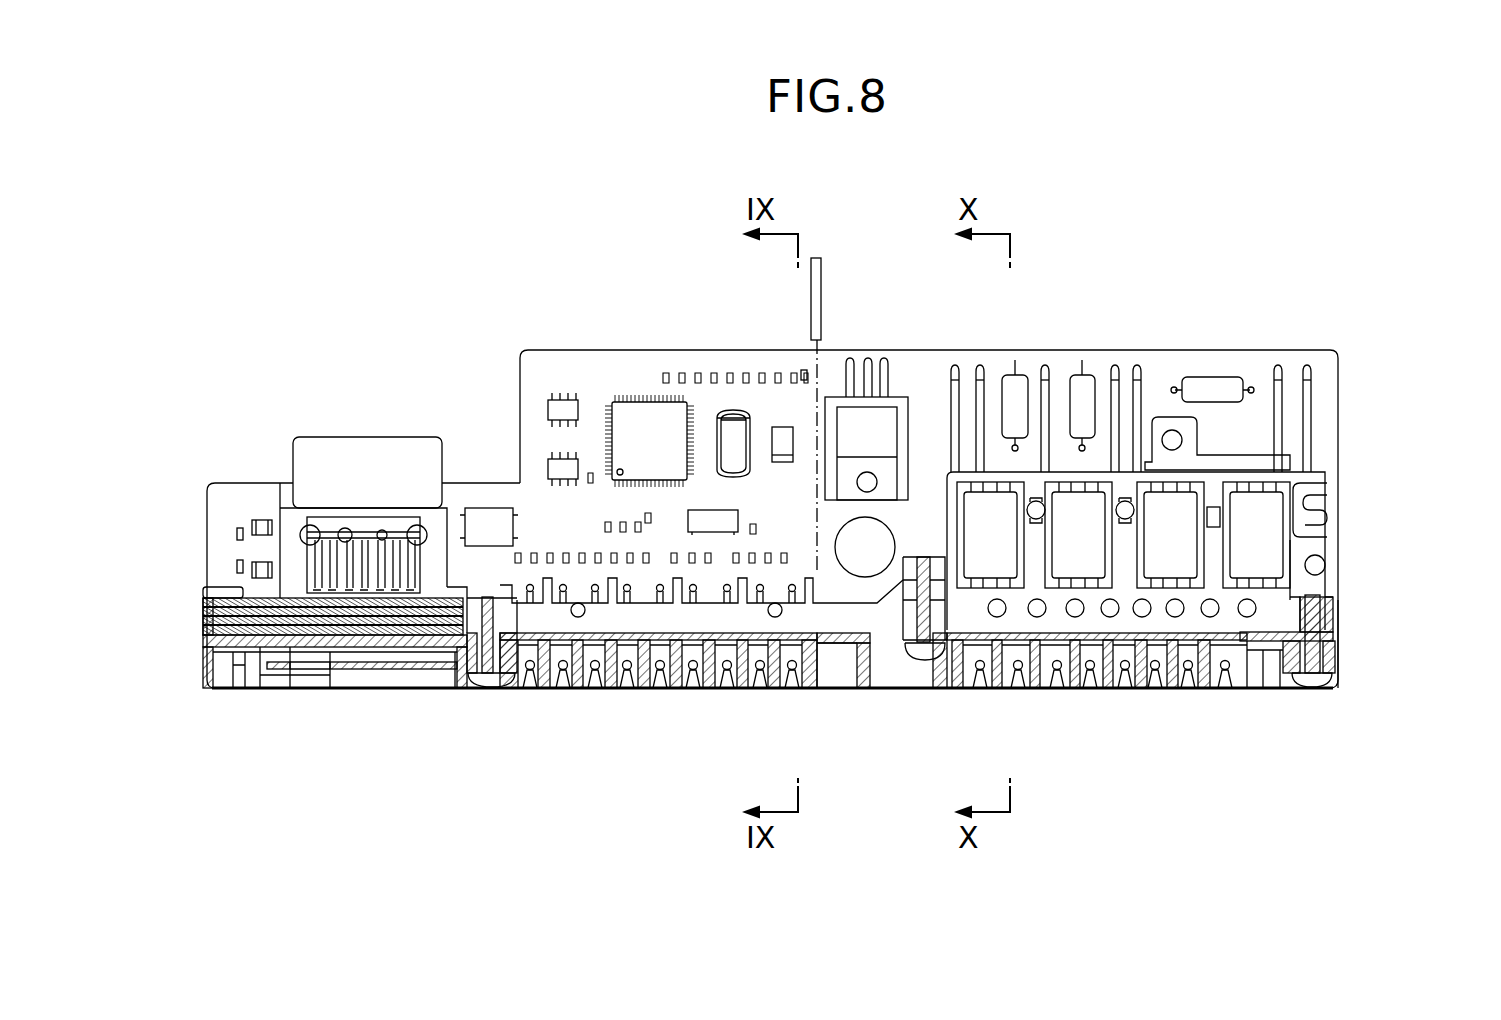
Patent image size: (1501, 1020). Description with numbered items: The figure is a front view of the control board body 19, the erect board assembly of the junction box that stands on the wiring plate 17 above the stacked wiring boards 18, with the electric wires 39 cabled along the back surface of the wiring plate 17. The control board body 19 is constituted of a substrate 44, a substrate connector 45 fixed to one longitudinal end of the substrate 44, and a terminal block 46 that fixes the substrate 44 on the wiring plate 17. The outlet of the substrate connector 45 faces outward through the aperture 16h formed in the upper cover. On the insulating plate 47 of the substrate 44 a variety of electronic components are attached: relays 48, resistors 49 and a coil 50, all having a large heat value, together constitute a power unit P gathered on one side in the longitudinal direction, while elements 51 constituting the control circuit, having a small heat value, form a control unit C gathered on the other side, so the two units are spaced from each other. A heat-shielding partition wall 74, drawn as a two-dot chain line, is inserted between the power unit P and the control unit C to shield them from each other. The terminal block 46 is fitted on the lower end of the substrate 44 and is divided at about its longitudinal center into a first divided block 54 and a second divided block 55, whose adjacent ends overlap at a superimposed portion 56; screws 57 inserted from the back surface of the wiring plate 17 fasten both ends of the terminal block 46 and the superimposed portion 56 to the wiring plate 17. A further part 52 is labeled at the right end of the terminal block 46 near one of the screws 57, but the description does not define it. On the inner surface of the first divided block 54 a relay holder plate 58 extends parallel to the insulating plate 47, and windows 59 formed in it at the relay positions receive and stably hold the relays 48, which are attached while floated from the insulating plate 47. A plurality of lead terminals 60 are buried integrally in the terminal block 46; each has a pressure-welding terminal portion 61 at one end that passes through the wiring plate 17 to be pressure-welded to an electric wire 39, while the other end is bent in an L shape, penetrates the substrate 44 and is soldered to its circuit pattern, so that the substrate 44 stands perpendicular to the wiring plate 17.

The aperture 16h is at (290, 488).
The wiring plate 17 is at (1345, 660).
The wiring boards 18 is at (200, 600).
The control board body 19 is at (1053, 337).
The electric wires 39 is at (373, 672).
The substrate 44 is at (1165, 387).
The substrate connector 45 is at (285, 567).
The terminal block 46 is at (1347, 643).
The insulating plate 47 is at (930, 367).
The relays 48 is at (1180, 515).
The resistors 49 is at (1022, 372).
The coil 50 is at (880, 542).
The elements 51 is at (780, 432).
The nut insert 52 is at (1262, 636).
The first divided block 54 is at (953, 610).
The second divided block 55 is at (650, 620).
The superimposed portion 56 is at (878, 620).
The screws 57 is at (490, 685).
The relay holder plate 58 is at (1212, 477).
The windows 59 is at (1193, 558).
The lead terminals 60 is at (563, 607).
The pressure-welding terminal portion 61 is at (730, 672).
The heat-shielding partition wall 74 is at (822, 315).
The control unit C is at (613, 388).
The power unit P is at (1220, 418).